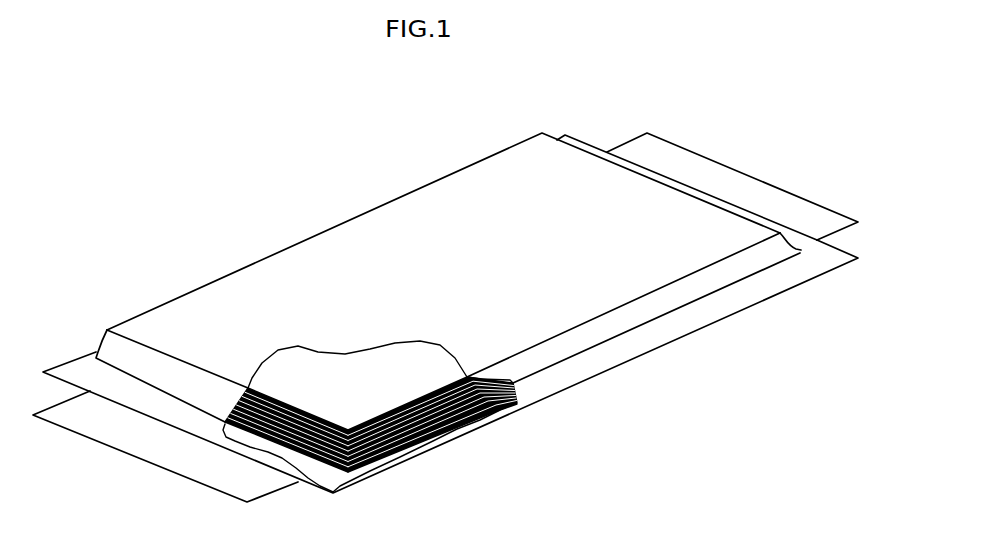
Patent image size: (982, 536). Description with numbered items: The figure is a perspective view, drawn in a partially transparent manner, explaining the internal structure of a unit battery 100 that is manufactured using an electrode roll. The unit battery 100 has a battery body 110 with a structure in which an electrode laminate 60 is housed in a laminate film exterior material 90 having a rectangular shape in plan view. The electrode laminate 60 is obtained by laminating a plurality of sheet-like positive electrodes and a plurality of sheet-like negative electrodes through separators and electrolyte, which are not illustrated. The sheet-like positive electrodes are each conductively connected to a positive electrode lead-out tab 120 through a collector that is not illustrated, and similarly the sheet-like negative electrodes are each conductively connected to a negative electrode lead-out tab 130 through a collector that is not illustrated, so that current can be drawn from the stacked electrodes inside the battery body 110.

The unit battery 100 is at (141, 181).
The battery body 110 is at (456, 174).
The positive electrode lead-out tab 120 is at (722, 165).
The negative electrode lead-out tab 130 is at (145, 456).
The laminate film exterior material 90 is at (637, 345).
The electrode laminate 60 is at (430, 420).